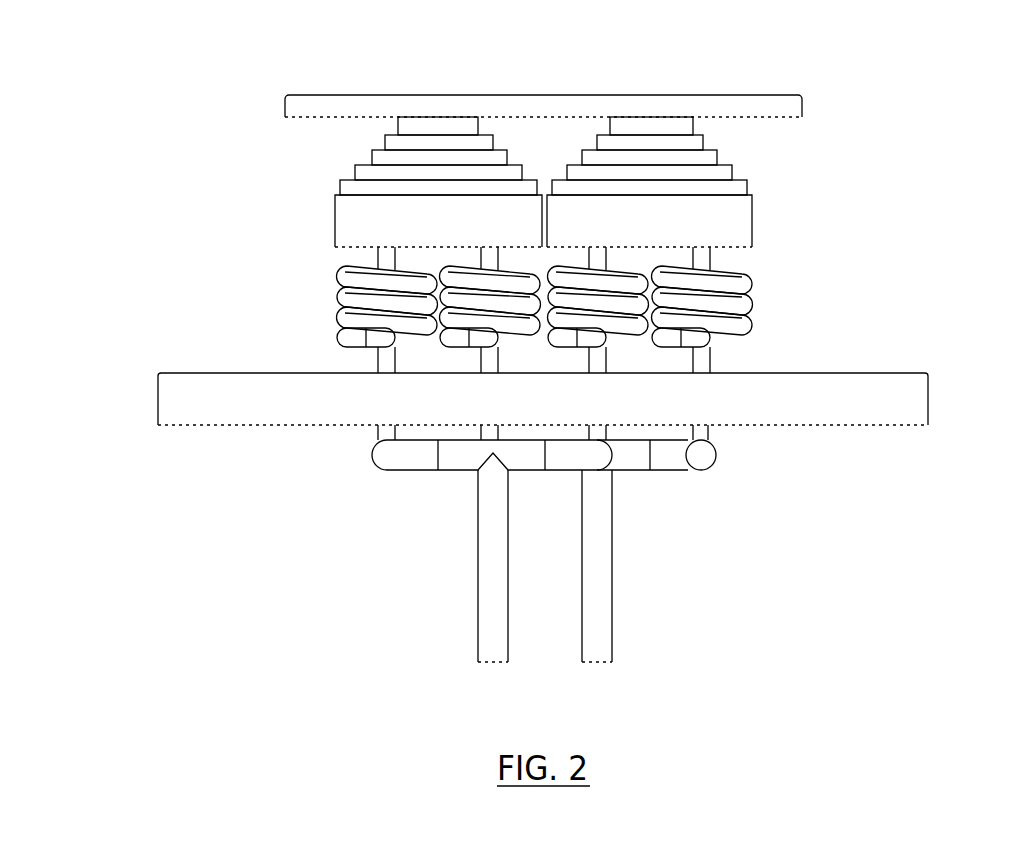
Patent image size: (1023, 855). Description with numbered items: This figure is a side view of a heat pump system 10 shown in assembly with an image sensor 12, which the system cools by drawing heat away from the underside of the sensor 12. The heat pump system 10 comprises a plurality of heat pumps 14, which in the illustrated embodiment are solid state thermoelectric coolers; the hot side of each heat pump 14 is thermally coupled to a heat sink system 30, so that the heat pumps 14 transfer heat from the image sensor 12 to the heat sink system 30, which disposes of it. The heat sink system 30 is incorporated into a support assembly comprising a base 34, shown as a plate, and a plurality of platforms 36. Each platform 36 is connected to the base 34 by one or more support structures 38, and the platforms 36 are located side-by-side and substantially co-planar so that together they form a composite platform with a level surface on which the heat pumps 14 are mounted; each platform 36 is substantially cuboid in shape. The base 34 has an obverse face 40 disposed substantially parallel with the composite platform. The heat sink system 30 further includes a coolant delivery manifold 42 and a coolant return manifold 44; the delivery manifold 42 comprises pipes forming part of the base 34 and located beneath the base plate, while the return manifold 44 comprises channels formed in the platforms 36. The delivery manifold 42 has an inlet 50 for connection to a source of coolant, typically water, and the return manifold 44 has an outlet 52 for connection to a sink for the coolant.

The heat pump system 10 is at (897, 256).
The image sensor 12 is at (750, 92).
The heat pumps 14 is at (338, 185).
The heat sink system 30 is at (324, 285).
The base 34 is at (366, 481).
The platforms 36 is at (340, 225).
The support structures 38 is at (345, 312).
The obverse face 40 is at (878, 372).
The coolant delivery manifold 42 is at (410, 476).
The coolant return manifold 44 is at (673, 476).
The inlet 50 is at (490, 652).
The outlet 52 is at (598, 655).